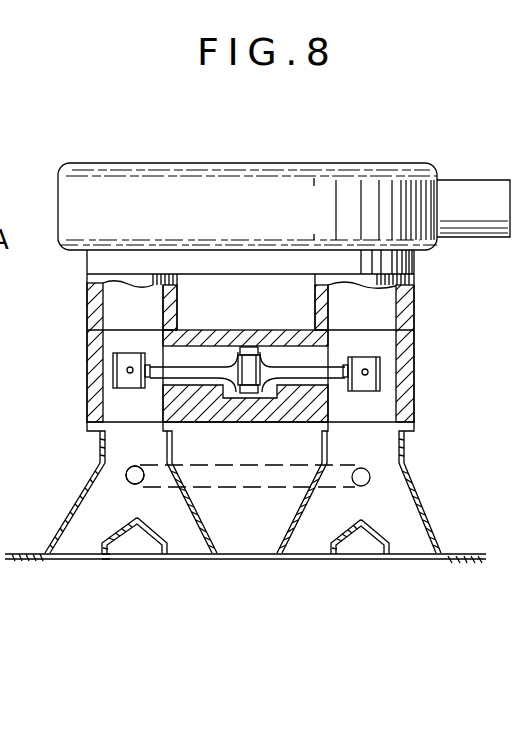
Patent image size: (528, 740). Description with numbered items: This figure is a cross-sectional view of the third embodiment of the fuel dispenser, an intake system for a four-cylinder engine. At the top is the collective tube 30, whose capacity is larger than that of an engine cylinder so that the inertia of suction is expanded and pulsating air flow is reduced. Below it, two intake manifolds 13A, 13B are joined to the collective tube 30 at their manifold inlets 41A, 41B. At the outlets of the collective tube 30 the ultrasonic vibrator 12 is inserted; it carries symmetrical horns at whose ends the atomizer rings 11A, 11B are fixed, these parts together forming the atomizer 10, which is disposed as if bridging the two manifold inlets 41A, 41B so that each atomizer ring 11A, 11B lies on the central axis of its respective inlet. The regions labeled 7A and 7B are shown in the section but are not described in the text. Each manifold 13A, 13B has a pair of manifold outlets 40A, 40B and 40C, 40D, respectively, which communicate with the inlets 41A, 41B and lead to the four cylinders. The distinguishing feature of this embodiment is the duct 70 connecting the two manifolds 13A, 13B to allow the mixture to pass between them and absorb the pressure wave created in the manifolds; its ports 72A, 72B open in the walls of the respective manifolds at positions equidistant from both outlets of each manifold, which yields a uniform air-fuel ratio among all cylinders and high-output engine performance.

The collective tube 30 is at (437, 178).
The first recess 7A is at (107, 302).
The second recess 7B is at (332, 302).
The ultrasonic vibrator 12 is at (240, 362).
The atomizer ring 11A is at (115, 388).
The atomizer ring 11B is at (384, 361).
The atomizer 10 is at (266, 398).
The duct 70 is at (212, 469).
The port 72A is at (140, 484).
The port 72B is at (370, 480).
The manifold inlet 41A is at (110, 426).
The manifold inlet 41B is at (374, 425).
The manifold 13A is at (92, 478).
The manifold 13B is at (384, 473).
The manifold outlet 40A is at (80, 562).
The manifold outlet 40B is at (180, 562).
The manifold outlet 40C is at (307, 565).
The manifold outlet 40D is at (409, 565).